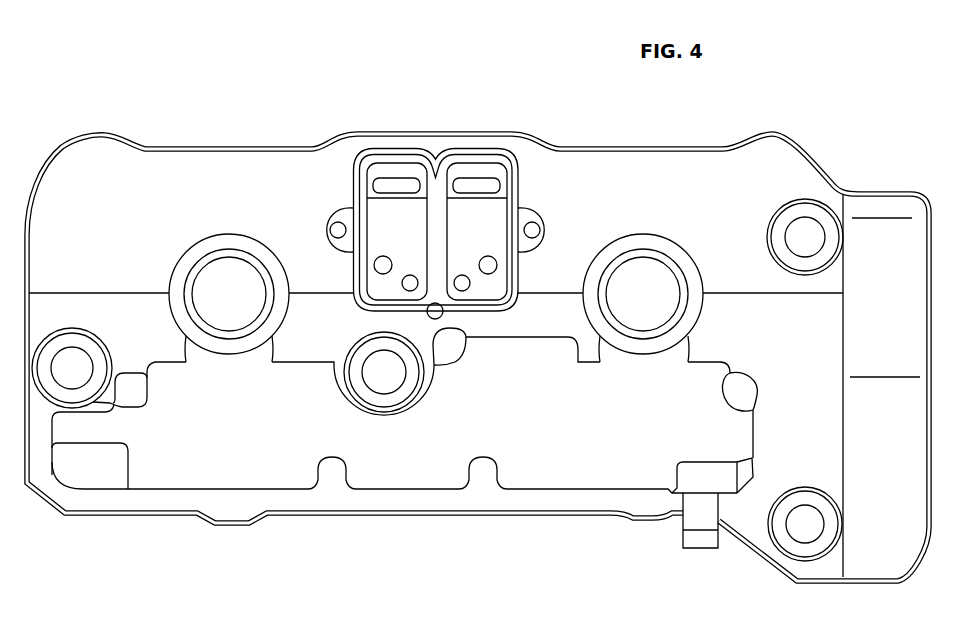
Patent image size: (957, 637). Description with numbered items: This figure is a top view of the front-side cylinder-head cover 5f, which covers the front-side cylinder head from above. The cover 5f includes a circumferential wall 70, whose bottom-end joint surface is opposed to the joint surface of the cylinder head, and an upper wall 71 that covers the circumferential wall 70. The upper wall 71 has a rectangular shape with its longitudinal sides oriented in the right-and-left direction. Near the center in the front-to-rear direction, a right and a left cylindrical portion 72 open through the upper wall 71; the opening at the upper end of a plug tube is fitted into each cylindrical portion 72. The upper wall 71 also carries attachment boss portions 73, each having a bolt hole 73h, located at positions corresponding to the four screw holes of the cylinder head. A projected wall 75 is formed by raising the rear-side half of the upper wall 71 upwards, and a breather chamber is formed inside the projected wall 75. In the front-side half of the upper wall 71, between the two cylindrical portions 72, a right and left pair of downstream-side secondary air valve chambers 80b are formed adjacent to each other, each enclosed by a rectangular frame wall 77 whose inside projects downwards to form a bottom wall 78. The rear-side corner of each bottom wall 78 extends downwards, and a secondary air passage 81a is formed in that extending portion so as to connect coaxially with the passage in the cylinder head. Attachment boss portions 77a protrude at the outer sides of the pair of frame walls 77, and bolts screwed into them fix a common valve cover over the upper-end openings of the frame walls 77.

The front-side cylinder-head cover 5f is at (426, 96).
The circumferential wall 70 is at (277, 146).
The upper wall 71 is at (210, 180).
The cylindrical portion 72 is at (190, 253).
The attachment boss portion 73 is at (110, 334).
The bolt hole 73h is at (78, 373).
The projected wall 75 is at (278, 473).
The rectangular frame wall 77 is at (353, 166).
The attachment boss portion 77a is at (323, 229).
The bottom wall 78 is at (382, 213).
The downstream-side secondary air valve chamber 80b is at (414, 247).
The secondary air passage 81a is at (376, 266).